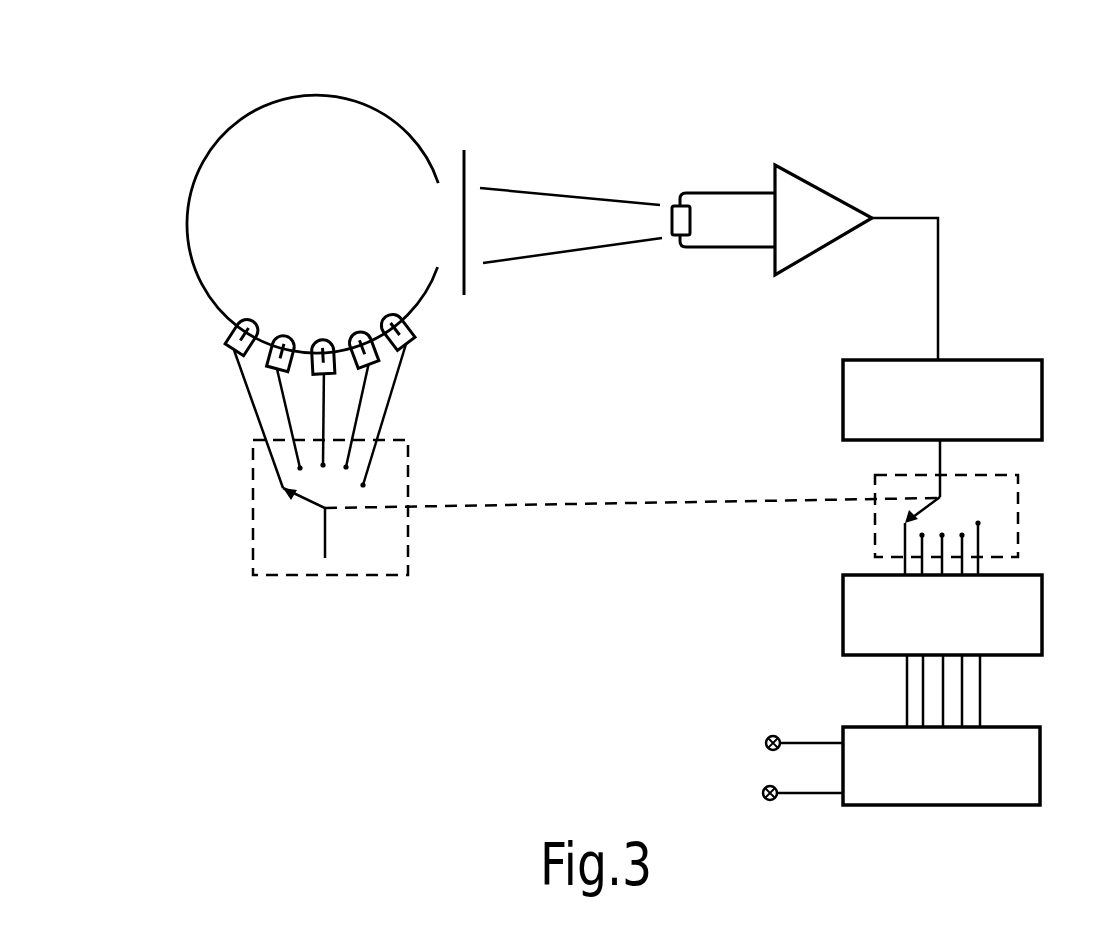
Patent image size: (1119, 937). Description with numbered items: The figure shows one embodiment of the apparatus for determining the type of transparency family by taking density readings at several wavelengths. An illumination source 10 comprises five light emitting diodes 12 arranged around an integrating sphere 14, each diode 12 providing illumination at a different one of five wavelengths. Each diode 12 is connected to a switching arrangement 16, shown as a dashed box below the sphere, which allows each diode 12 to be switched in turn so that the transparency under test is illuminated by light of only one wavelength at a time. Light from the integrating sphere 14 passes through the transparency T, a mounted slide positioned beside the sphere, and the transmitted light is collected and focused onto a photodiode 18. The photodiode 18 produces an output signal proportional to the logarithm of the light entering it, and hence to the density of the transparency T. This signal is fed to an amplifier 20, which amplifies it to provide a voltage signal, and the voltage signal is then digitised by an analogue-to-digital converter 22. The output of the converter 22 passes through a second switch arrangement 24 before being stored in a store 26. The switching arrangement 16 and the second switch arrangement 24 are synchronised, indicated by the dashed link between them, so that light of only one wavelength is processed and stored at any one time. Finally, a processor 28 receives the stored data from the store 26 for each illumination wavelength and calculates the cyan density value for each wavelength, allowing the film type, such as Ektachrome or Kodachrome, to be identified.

The illumination source 10 is at (213, 91).
The light emitting diodes 12 is at (318, 372).
The integrating sphere 14 is at (303, 246).
The switching arrangement 16 is at (312, 565).
The photodiode 18 is at (663, 187).
The amplifier 20 is at (790, 235).
The analogue-to-digital converter 22 is at (925, 416).
The second switch arrangement 24 is at (1018, 508).
The store 26 is at (931, 631).
The processor 28 is at (923, 784).
The transparency T is at (478, 313).